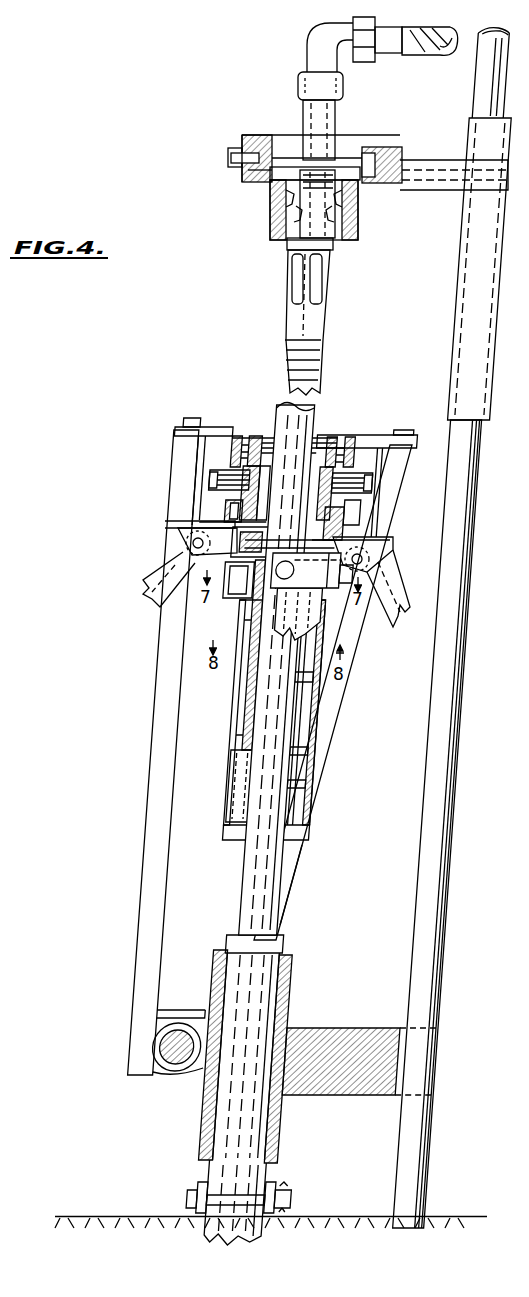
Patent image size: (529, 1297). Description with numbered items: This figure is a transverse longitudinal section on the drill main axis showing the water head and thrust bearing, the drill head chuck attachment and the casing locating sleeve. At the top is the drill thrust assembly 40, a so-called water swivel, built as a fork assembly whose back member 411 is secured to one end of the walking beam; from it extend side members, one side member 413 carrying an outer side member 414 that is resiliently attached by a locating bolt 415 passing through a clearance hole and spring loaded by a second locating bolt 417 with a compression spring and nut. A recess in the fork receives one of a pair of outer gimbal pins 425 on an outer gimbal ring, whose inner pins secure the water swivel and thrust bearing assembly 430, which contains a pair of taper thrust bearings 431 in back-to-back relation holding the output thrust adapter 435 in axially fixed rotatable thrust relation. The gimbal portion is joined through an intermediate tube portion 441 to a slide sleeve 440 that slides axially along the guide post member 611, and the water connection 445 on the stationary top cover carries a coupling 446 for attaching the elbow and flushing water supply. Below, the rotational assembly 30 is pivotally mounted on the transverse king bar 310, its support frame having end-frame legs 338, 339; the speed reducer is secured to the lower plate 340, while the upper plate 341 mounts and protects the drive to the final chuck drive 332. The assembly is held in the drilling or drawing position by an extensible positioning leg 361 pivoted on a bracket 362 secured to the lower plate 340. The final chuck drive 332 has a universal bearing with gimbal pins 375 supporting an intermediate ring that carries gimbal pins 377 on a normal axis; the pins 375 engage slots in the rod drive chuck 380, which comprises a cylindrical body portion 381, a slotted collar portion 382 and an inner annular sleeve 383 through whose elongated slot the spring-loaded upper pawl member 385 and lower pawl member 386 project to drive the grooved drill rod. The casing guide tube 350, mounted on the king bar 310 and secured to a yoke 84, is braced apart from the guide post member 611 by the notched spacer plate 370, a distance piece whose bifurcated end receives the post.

The assembly 30 is at (158, 455).
The drill thrust assembly 40 is at (350, 136).
The yoke 84 is at (196, 1192).
The king bar 310 is at (170, 1065).
The final chuck drive 332 is at (358, 623).
The end-frame leg 338 is at (150, 822).
The end-frame leg 339 is at (296, 868).
The lower plate 340 is at (160, 500).
The upper plate 341 is at (375, 436).
The casing guide tube 350 is at (293, 965).
The assembly positioning leg 361 is at (158, 585).
The bracket 362 is at (175, 527).
The spacer plate 370 is at (345, 1027).
The gimbal pins 375 is at (370, 562).
The gimbal pins 377 is at (262, 600).
The rod drive chuck 380 is at (316, 792).
The cylindrical body portion 381 is at (322, 709).
The collar portion 382 is at (254, 575).
The inner annular sleeve 383 is at (296, 763).
The upper pawl member 385 is at (246, 660).
The lower pawl member 386 is at (232, 766).
The back member 411 is at (242, 136).
The side member 413 is at (252, 185).
The outer side member 414 is at (248, 175).
The locating bolt 415 is at (230, 159).
The second locating bolt 417 is at (232, 150).
The outer gimbal pins 425 is at (256, 147).
The thrust bearing assembly 430 is at (258, 236).
The taper thrust bearings 431 is at (348, 212).
The output thrust adapter 435 is at (330, 272).
The slide sleeve 440 is at (456, 330).
The intermediate tube portion 441 is at (438, 160).
The water connection 445 is at (335, 123).
The coupling 446 is at (300, 86).
The guide post member 611 is at (455, 752).